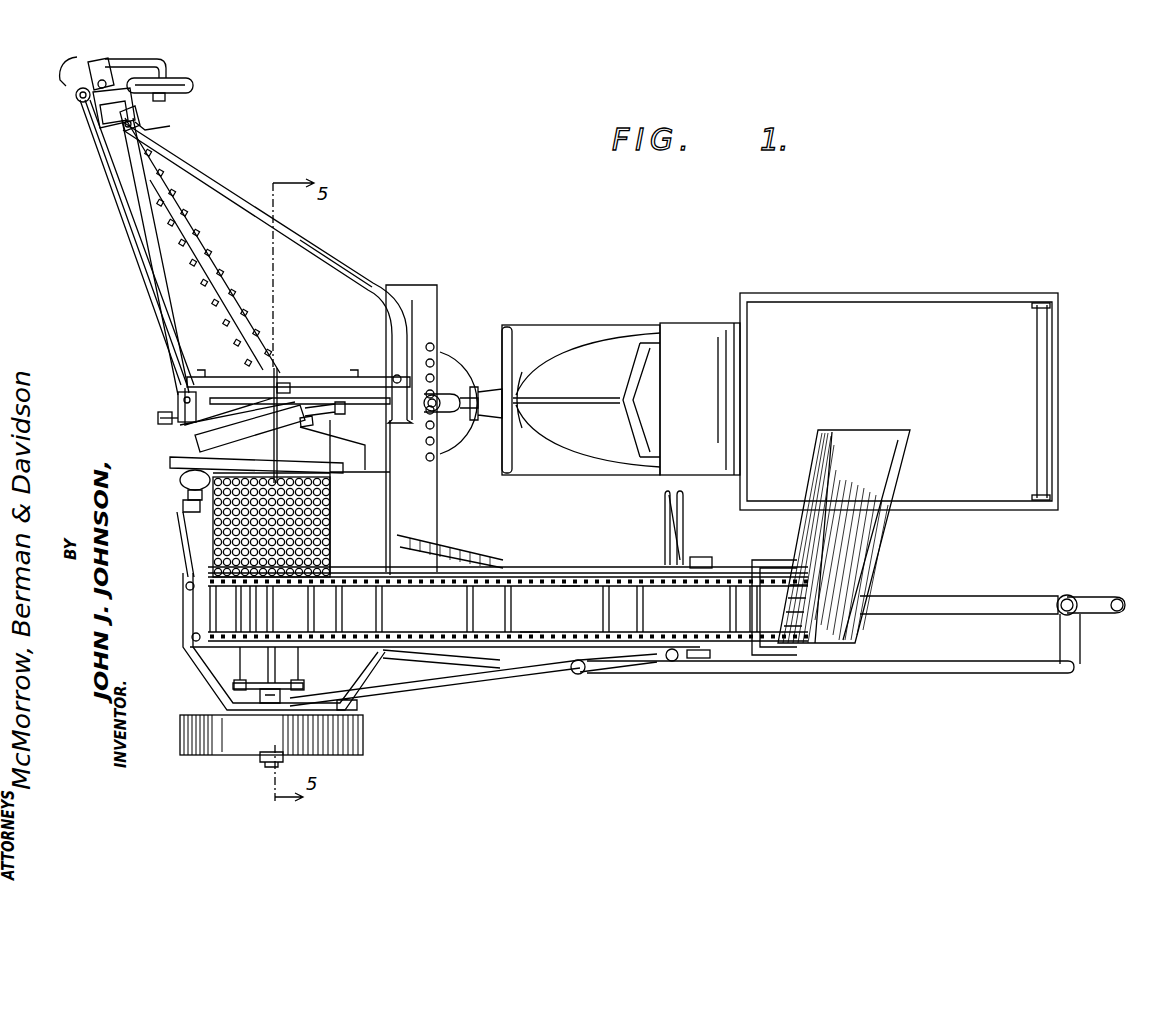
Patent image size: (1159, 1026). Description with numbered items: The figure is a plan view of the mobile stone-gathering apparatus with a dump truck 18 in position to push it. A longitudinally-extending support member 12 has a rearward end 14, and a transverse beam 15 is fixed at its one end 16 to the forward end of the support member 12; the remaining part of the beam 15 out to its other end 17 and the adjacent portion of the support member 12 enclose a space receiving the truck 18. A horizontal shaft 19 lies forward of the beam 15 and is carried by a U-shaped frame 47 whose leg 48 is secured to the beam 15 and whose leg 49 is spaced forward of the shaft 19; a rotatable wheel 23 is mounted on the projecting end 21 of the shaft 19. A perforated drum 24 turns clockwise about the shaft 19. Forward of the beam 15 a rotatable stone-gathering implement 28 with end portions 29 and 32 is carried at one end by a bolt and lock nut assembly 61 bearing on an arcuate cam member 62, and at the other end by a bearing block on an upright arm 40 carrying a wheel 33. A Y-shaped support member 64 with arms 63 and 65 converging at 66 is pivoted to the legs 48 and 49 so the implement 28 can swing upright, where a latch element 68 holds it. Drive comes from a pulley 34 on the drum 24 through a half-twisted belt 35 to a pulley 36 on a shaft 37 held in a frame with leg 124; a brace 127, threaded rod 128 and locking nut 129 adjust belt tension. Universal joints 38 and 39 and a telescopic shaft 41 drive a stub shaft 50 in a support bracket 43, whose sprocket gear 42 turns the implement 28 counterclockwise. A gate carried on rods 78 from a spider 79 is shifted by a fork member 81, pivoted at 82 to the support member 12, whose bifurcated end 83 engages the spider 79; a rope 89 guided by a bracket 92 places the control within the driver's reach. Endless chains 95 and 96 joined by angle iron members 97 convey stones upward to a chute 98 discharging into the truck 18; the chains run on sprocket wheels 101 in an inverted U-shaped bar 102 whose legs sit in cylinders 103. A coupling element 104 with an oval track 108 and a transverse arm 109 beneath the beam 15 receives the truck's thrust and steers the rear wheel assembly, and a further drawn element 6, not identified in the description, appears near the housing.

The frame member 6 is at (408, 344).
The support member 12 is at (910, 592).
The rearward end 14 is at (1092, 597).
The beam 15 is at (451, 469).
The one end 16 is at (470, 551).
The other end 17 is at (432, 293).
The dump truck 18 is at (704, 319).
The shaft 19 is at (298, 663).
The projecting end 21 is at (267, 763).
The rotatable wheel 23 is at (353, 751).
The perforated drum 24 is at (337, 493).
The stone-gathering implement 28 is at (212, 220).
The end portion 29 is at (284, 380).
The end portion 32 is at (134, 111).
The wheel 33 is at (184, 82).
The pulley 34 is at (314, 463).
The belt 35 is at (345, 467).
The pulley 36 is at (180, 488).
The shaft 37 is at (180, 507).
The universal joint 38 is at (190, 414).
The universal joint 39 is at (128, 124).
The upright arm 40 is at (150, 62).
The telescopic shaft 41 is at (167, 302).
The sprocket gear 42 is at (76, 100).
The support bracket 43 is at (92, 76).
The U-shaped frame 47 is at (205, 699).
The leg 48 is at (388, 492).
The leg 49 is at (180, 552).
The stub shaft 50 is at (133, 102).
The bolt and lock nut assembly 61 is at (75, 88).
The cam member 62 is at (395, 342).
The arm 63 is at (338, 257).
The Y-shaped support member 64 is at (214, 176).
The arm 65 is at (140, 263).
The convergence 66 is at (99, 127).
The latch element 68 is at (281, 380).
The rods 78 is at (240, 663).
The spider 79 is at (268, 666).
The fork member 81 is at (390, 688).
The pivotal connection 82 is at (580, 677).
The bifurcated end 83 is at (277, 710).
The rope 89 is at (665, 515).
The bracket 92 is at (676, 521).
The endless chain 95 is at (537, 634).
The endless chain 96 is at (570, 587).
The angle iron members 97 is at (508, 613).
The chute 98 is at (857, 552).
The sprocket wheels 101 is at (793, 620).
The inverted U-shaped bar 102 is at (748, 645).
The cylinder 103 is at (723, 562).
The coupling element 104 is at (476, 375).
The oval-shaped track 108 is at (443, 356).
The arm 109 is at (457, 413).
The leg 124 is at (190, 442).
The brace 127 is at (247, 428).
The threaded rod 128 is at (316, 413).
The locking nut 129 is at (307, 427).